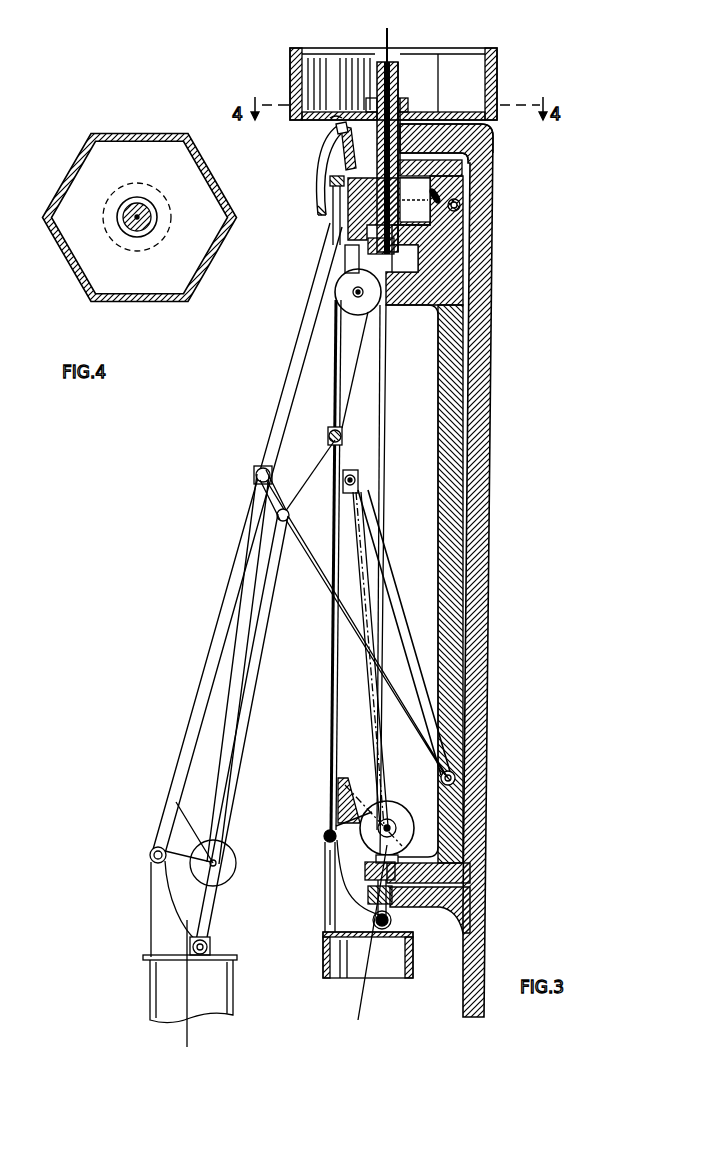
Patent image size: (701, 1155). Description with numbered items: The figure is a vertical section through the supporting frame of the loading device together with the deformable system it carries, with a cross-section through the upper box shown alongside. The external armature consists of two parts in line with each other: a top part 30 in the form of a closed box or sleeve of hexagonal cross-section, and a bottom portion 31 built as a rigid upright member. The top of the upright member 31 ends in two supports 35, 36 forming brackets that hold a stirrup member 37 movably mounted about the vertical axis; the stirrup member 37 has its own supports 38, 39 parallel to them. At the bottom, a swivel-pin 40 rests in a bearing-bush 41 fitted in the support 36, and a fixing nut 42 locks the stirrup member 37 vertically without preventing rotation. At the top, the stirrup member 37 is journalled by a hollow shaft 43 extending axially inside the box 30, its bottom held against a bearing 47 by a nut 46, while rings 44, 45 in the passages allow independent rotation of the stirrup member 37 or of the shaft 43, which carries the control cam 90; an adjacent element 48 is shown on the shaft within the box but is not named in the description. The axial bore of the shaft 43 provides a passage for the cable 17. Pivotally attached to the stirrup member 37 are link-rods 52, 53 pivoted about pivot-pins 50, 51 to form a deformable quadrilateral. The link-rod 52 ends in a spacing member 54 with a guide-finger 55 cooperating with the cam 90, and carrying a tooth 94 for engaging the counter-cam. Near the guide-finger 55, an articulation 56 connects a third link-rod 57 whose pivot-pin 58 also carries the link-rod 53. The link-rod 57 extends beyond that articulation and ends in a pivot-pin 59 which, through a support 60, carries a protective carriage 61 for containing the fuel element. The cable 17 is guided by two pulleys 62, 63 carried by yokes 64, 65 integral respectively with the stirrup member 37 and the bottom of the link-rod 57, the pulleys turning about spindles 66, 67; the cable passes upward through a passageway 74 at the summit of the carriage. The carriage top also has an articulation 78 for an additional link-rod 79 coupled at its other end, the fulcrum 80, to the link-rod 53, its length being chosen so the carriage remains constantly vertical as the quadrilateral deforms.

In FIG. 4, the cable 17 is at (140, 235).
In FIG. 3, the cable 17 is at (389, 30).
In FIG. 4, the top part 30 is at (137, 136).
In FIG. 3, the top part 30 is at (497, 70).
In FIG. 3, the bottom portion 31 is at (486, 373).
In FIG. 3, the support 35 is at (455, 136).
In FIG. 3, the support 36 is at (440, 909).
In FIG. 3, the stirrup member 37 is at (446, 336).
In FIG. 3, the support 38 is at (440, 192).
In FIG. 3, the support 39 is at (442, 866).
In FIG. 3, the swivel-pin 40 is at (365, 870).
In FIG. 3, the bearing-bush 41 is at (389, 903).
In FIG. 3, the fixing nut 42 is at (398, 858).
In FIG. 4, the hollow shaft 43 is at (152, 210).
In FIG. 3, the hollow shaft 43 is at (396, 62).
In FIG. 3, the ring 44 is at (408, 106).
In FIG. 3, the ring 45 is at (432, 170).
In FIG. 3, the nut 46 is at (393, 255).
In FIG. 3, the bearing 47 is at (426, 236).
In FIG. 3, the bushing 48 is at (399, 82).
In FIG. 3, the pivot-pin 50 is at (461, 205).
In FIG. 3, the pivot-pin 51 is at (442, 777).
In FIG. 3, the link-rod 52 is at (345, 151).
In FIG. 3, the link-rod 53 is at (389, 592).
In FIG. 3, the spacing member 54 is at (338, 132).
In FIG. 3, the guide-finger 55 is at (323, 183).
In FIG. 3, the articulation 56 is at (330, 176).
In FIG. 3, the link-rod 57 is at (337, 381).
In FIG. 3, the pivot-pin 58 is at (343, 434).
In FIG. 3, the pivot-pin 59 is at (324, 836).
In FIG. 3, the support 60 is at (331, 889).
In FIG. 3, the protective carriage 61 is at (323, 953).
In FIG. 3, the pulley 62 is at (352, 313).
In FIG. 3, the pulley 63 is at (405, 810).
In FIG. 3, the yoke 64 is at (408, 290).
In FIG. 3, the yoke 65 is at (340, 786).
In FIG. 3, the spindle 66 is at (358, 290).
In FIG. 3, the spindle 67 is at (387, 824).
In FIG. 3, the passageway 74 is at (372, 934).
In FIG. 3, the articulation 78 is at (392, 921).
In FIG. 3, the link-rod 79 is at (373, 738).
In FIG. 3, the fulcrum 80 is at (352, 470).
In FIG. 4, the control cam 90 is at (162, 228).
In FIG. 3, the control cam 90 is at (430, 216).
In FIG. 3, the tooth 94 is at (338, 126).